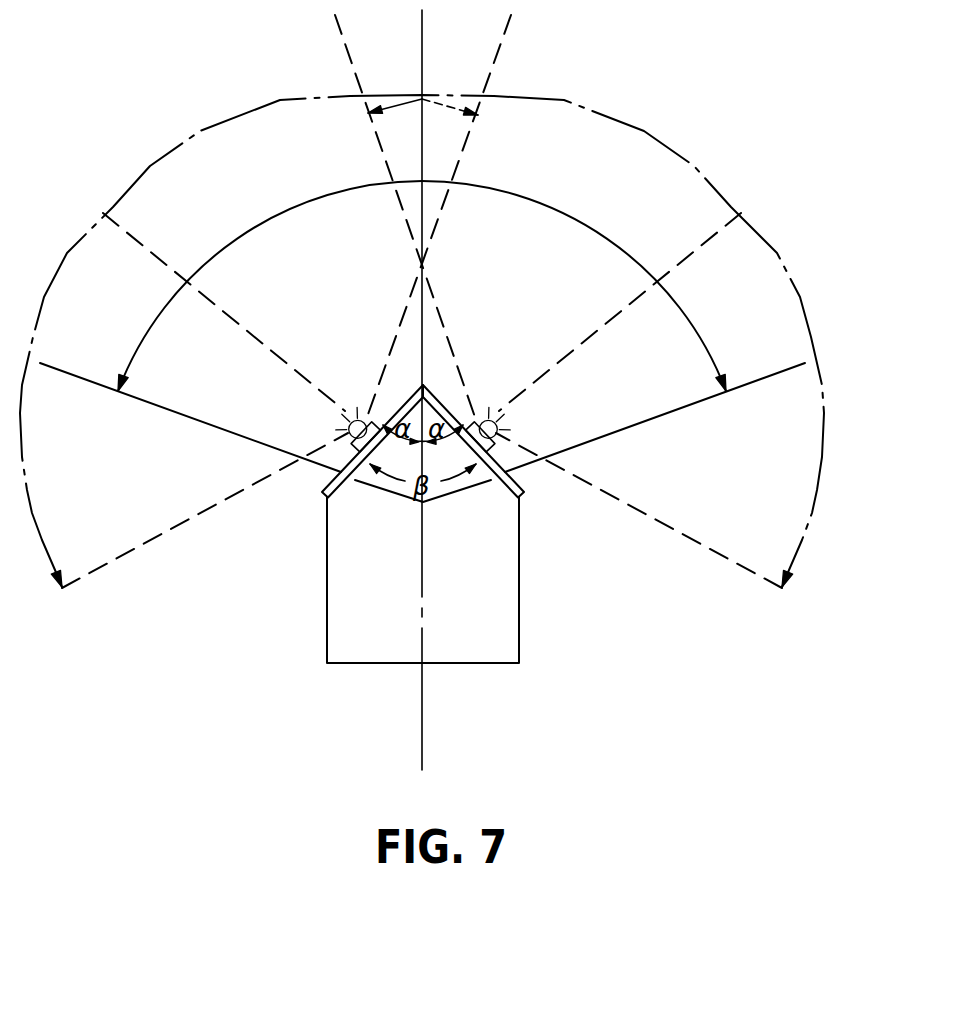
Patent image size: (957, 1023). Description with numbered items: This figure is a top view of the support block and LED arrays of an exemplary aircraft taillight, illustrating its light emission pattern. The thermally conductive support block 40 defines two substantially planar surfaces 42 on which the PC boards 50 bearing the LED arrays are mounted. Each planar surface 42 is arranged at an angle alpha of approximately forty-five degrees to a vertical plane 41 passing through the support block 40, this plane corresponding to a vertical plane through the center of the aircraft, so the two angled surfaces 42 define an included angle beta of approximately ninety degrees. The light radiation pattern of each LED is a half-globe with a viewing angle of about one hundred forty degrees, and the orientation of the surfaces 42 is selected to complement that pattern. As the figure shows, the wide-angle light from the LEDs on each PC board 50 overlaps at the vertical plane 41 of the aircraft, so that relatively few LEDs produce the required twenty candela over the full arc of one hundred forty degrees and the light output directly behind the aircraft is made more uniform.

The thermally conductive support block 40 is at (510, 638).
The vertical plane 41 is at (422, 575).
The planar surfaces 42 is at (503, 490).
The PC boards 50 is at (527, 483).